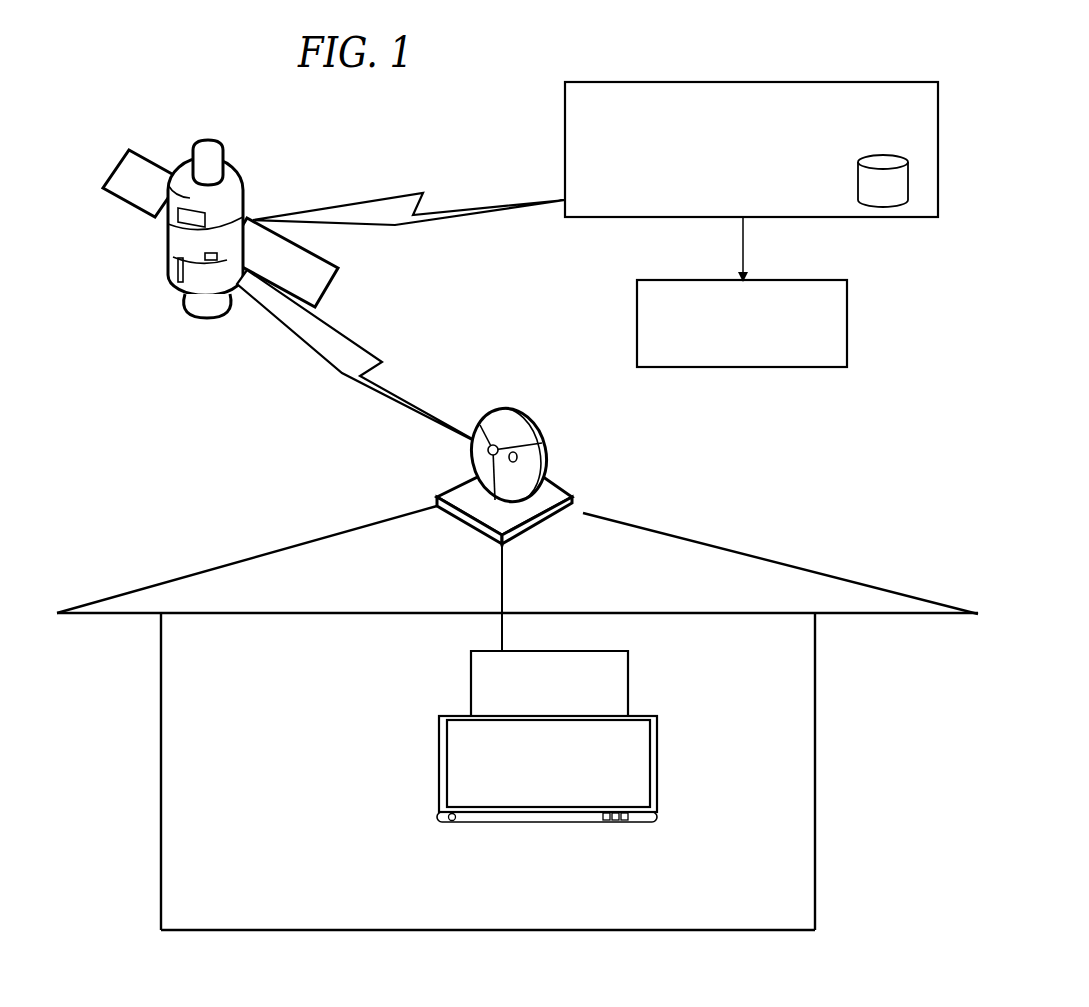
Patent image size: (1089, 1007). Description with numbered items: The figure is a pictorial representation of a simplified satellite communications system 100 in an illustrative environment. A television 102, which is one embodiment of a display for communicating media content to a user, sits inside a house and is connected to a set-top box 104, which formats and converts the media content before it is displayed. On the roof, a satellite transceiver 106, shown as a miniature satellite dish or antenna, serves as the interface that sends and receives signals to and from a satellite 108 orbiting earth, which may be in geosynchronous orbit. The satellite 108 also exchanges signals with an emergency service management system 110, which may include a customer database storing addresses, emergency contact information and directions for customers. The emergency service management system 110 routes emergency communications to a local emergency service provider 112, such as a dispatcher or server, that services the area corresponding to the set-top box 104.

The satellite communications system 100 is at (1060, 164).
The television 102 is at (567, 776).
The set-top box 104 is at (572, 702).
The satellite transceiver 106 is at (520, 485).
The satellite 108 is at (300, 278).
The emergency service management system 110 is at (770, 174).
The local emergency service provider 112 is at (762, 358).